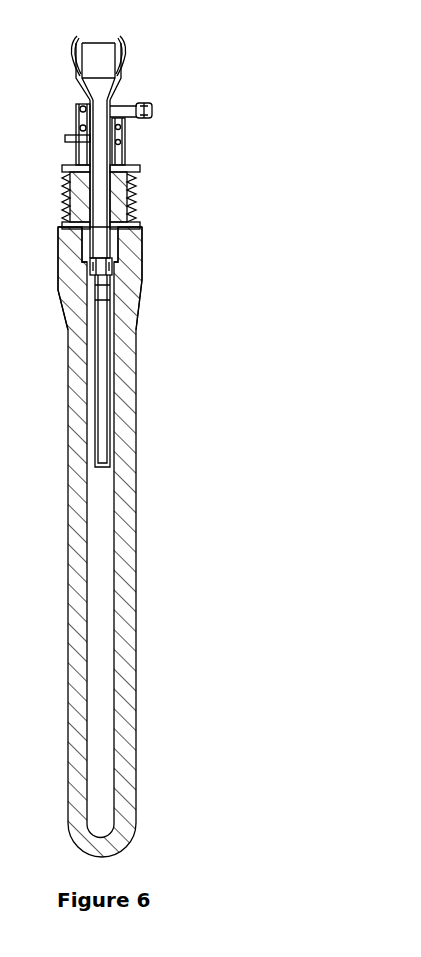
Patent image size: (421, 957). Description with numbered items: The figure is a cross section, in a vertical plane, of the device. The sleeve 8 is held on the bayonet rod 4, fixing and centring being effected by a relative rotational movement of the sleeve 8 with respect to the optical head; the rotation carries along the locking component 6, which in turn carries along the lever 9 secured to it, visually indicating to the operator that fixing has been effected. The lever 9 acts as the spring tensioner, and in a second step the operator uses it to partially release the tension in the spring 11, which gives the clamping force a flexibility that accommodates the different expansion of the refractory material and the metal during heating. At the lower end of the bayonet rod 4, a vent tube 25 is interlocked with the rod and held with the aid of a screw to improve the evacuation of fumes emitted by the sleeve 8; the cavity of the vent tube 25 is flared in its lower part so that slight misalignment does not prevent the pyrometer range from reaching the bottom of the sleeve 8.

The bayonet rod 4 is at (132, 93).
The lever 9 is at (137, 127).
The spring 11 is at (133, 183).
The locking component 6 is at (143, 230).
The vent tube 25 is at (135, 350).
The sleeve 8 is at (135, 703).